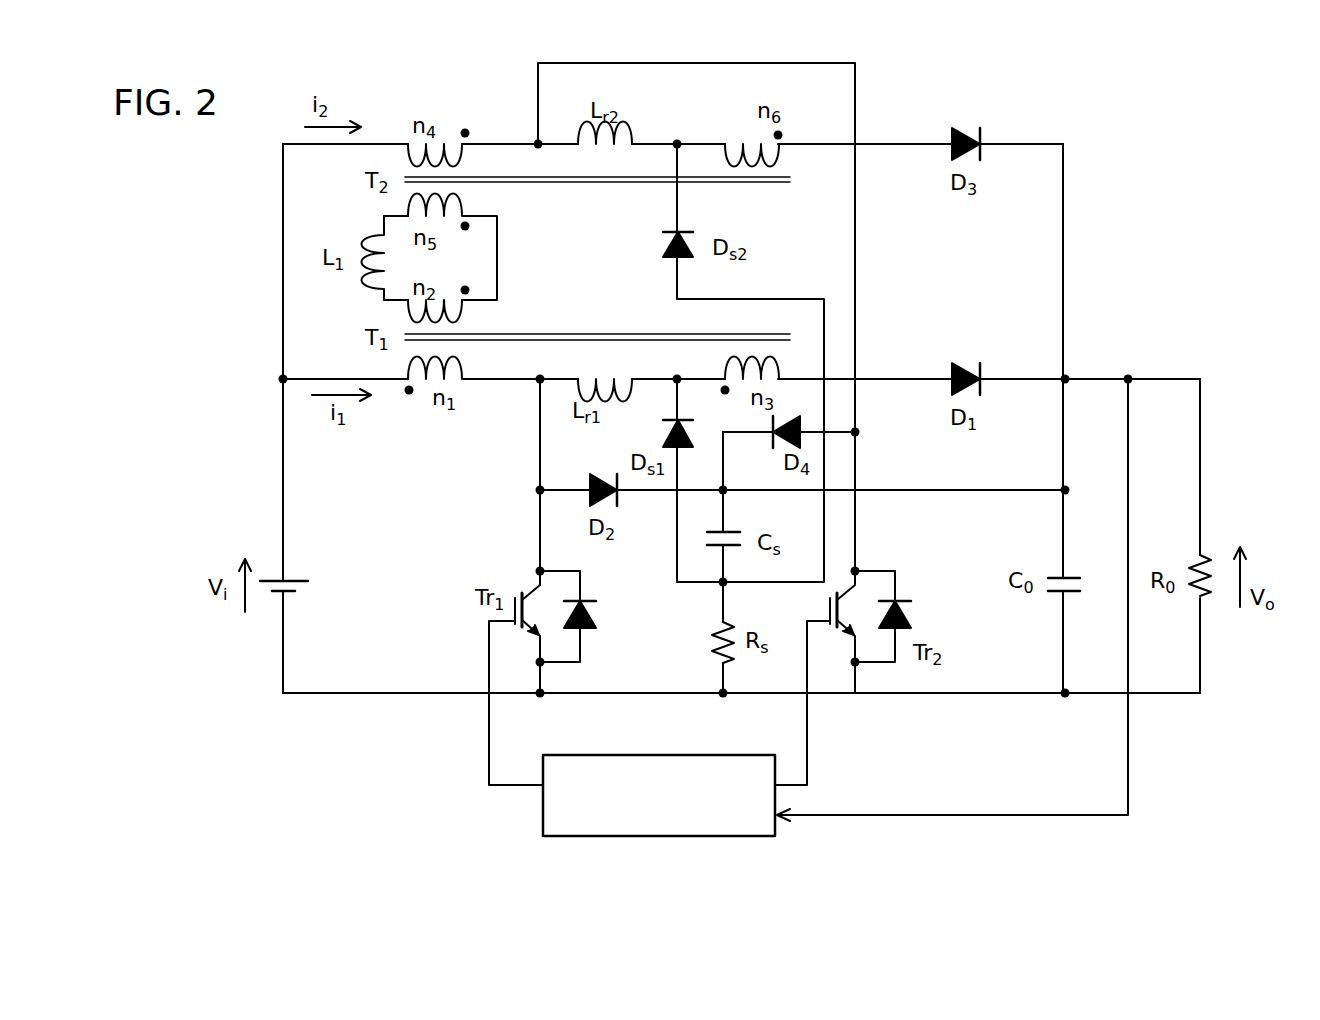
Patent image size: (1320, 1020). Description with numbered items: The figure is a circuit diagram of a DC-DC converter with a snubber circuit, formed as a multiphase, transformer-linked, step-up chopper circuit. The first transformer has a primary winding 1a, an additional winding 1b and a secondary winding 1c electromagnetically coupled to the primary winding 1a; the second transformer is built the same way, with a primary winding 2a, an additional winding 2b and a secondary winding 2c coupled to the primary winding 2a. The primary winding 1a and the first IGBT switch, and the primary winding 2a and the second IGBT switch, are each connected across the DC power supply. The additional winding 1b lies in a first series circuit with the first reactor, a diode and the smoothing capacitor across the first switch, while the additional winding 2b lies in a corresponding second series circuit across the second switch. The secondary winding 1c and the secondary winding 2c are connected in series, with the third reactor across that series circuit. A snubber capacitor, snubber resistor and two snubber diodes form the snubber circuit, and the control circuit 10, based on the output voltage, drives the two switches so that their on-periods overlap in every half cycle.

The primary winding 1a is at (418, 396).
The additional winding 1b is at (722, 372).
The secondary winding 1c is at (463, 307).
The primary winding 2a is at (451, 130).
The additional winding 2b is at (748, 138).
The secondary winding 2c is at (463, 213).
The control circuit 10 is at (645, 752).